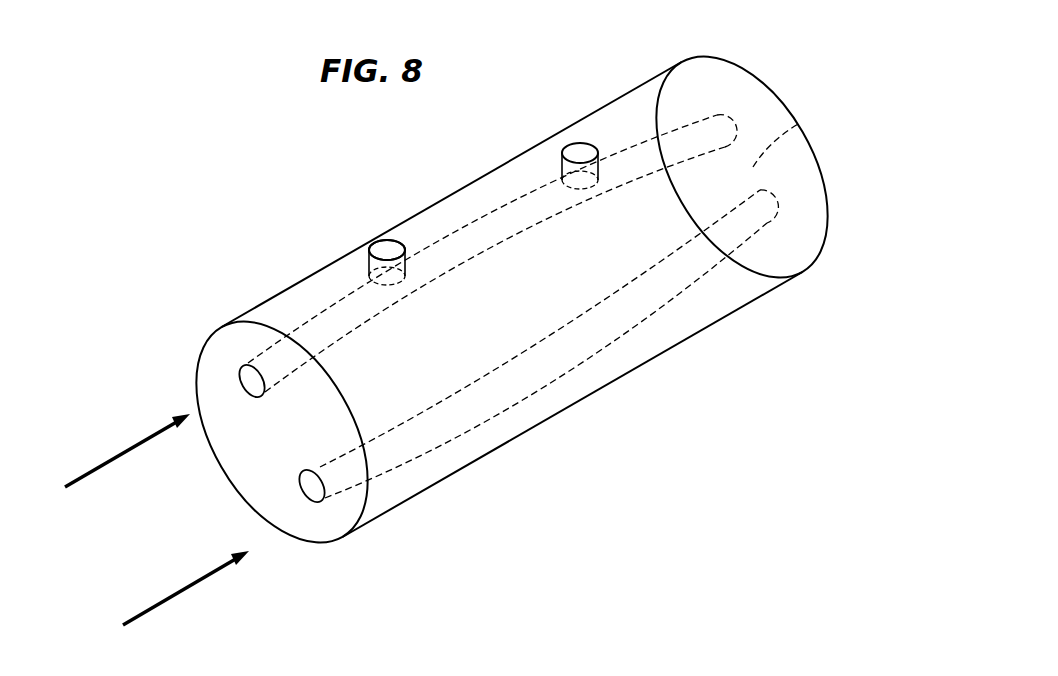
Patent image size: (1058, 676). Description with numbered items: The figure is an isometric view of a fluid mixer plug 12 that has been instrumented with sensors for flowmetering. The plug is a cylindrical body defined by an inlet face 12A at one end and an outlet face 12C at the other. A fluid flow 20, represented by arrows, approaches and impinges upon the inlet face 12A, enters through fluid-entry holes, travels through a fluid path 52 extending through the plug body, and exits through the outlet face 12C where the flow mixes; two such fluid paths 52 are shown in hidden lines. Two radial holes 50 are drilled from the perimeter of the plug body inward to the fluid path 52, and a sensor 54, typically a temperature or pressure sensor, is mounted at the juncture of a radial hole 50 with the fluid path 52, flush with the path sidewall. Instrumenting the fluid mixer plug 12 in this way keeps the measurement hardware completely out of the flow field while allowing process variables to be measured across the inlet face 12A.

The fluid mixer plug 12 is at (517, 299).
The inlet face 12A is at (282, 433).
The outlet face 12C is at (797, 128).
The fluid flow 20 is at (120, 458).
The radial holes 50 is at (565, 182).
The fluid path 52 is at (640, 154).
The sensor 54 is at (388, 250).